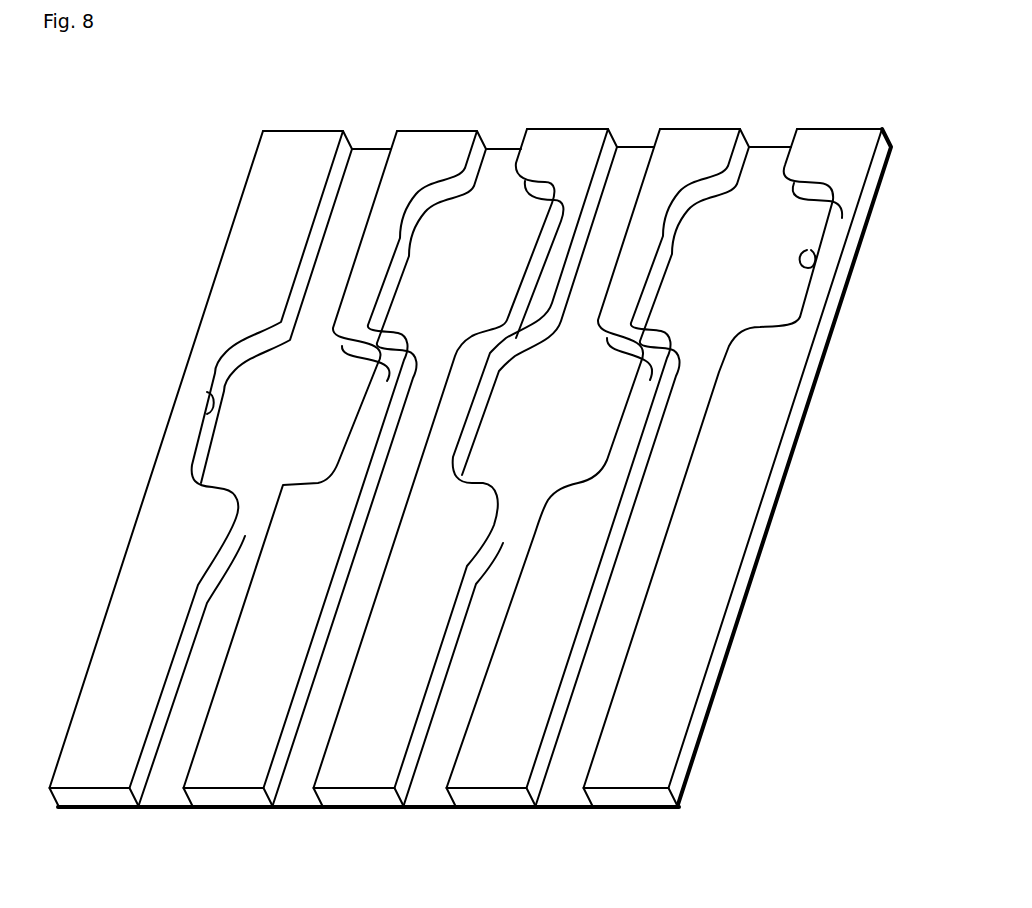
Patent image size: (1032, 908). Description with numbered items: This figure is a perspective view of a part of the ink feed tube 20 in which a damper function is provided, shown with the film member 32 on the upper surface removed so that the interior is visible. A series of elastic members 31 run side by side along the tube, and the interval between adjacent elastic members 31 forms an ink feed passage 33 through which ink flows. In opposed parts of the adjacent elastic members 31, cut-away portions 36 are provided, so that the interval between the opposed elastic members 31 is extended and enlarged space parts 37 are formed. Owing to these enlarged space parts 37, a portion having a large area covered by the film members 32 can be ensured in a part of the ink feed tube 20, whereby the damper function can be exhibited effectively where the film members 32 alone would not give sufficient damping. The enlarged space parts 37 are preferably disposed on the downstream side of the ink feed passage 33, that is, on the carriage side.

The ink feed tube 20 is at (748, 628).
The elastic member 31 is at (439, 138).
The film member 32 is at (297, 810).
The ink feed passage 33 is at (165, 785).
The cut-away portion 36 is at (207, 392).
The enlarged space part 37 is at (240, 440).